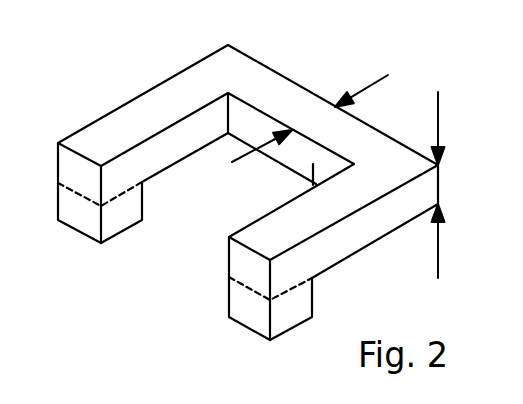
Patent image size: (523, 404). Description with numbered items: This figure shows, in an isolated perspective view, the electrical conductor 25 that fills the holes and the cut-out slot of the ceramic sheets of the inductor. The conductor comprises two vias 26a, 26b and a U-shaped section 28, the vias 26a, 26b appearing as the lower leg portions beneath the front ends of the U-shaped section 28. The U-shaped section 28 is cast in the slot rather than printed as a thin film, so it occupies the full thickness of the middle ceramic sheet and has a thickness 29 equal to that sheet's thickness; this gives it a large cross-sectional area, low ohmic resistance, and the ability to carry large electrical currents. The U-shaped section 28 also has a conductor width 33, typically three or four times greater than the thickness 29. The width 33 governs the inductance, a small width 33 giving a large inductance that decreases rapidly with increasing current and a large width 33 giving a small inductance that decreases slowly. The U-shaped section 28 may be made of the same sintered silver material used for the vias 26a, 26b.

The electrical conductor 25 is at (108, 70).
The U-shaped section 28 is at (233, 70).
The via 26a is at (83, 218).
The via 26b is at (248, 313).
The thickness 29 is at (438, 120).
The conductor width 33 is at (366, 88).